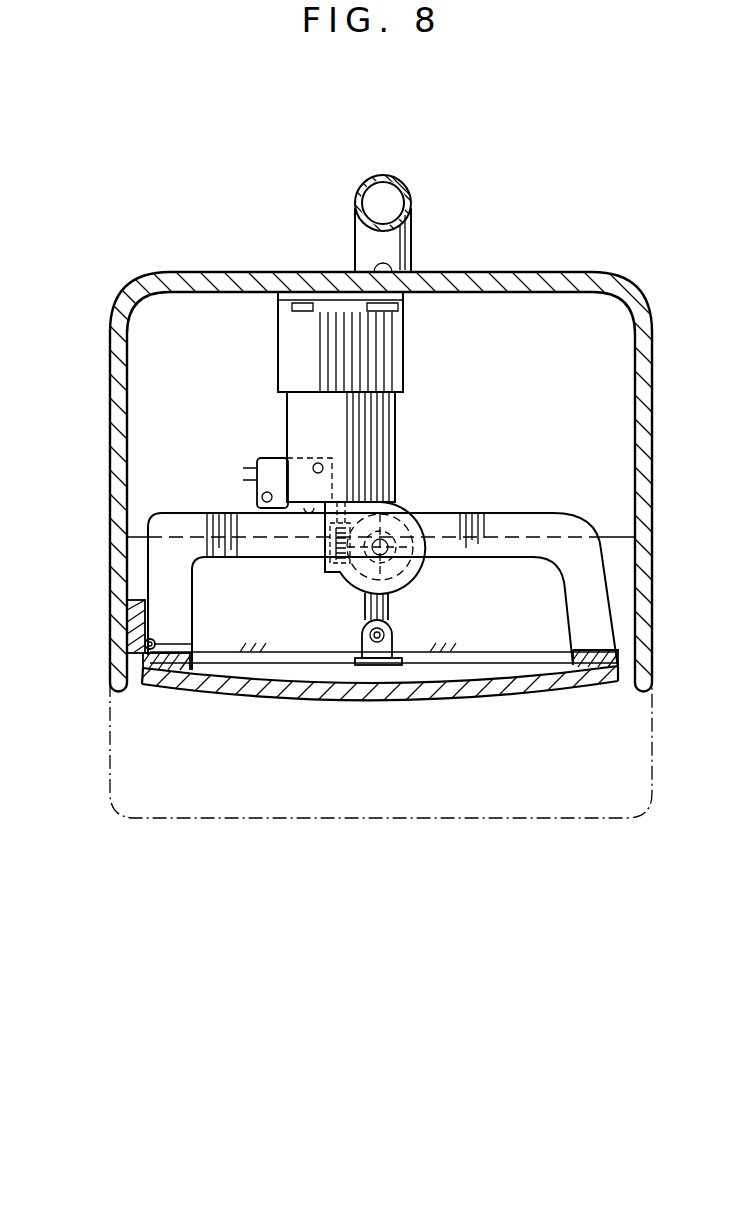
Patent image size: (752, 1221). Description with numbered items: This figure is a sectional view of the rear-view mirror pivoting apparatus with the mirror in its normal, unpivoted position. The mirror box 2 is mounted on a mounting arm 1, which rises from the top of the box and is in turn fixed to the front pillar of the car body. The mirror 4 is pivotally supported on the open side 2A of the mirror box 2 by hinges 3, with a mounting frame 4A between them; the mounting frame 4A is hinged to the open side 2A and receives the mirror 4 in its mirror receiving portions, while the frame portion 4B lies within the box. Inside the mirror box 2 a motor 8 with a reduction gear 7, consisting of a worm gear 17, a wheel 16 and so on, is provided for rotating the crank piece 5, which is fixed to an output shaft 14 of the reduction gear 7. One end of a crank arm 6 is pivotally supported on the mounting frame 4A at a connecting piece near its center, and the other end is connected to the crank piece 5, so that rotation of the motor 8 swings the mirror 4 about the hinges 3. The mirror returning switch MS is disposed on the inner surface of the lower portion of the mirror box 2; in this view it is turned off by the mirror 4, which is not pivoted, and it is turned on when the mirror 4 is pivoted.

The mounting arm 1 is at (355, 198).
The mirror box 2 is at (494, 272).
The open side 2A is at (130, 628).
The hinges 3 is at (153, 638).
The mirror 4 is at (467, 692).
The mounting frame 4A is at (165, 688).
The water tray 4B is at (515, 525).
The crank piece 5 is at (408, 535).
The crank arm 6 is at (389, 605).
The reduction gear 7 is at (398, 512).
The motor 8 is at (390, 426).
The output shaft 14 is at (350, 580).
The wheel 16 is at (420, 586).
The worm gear 17 is at (330, 543).
The mirror returning switch MS is at (268, 458).